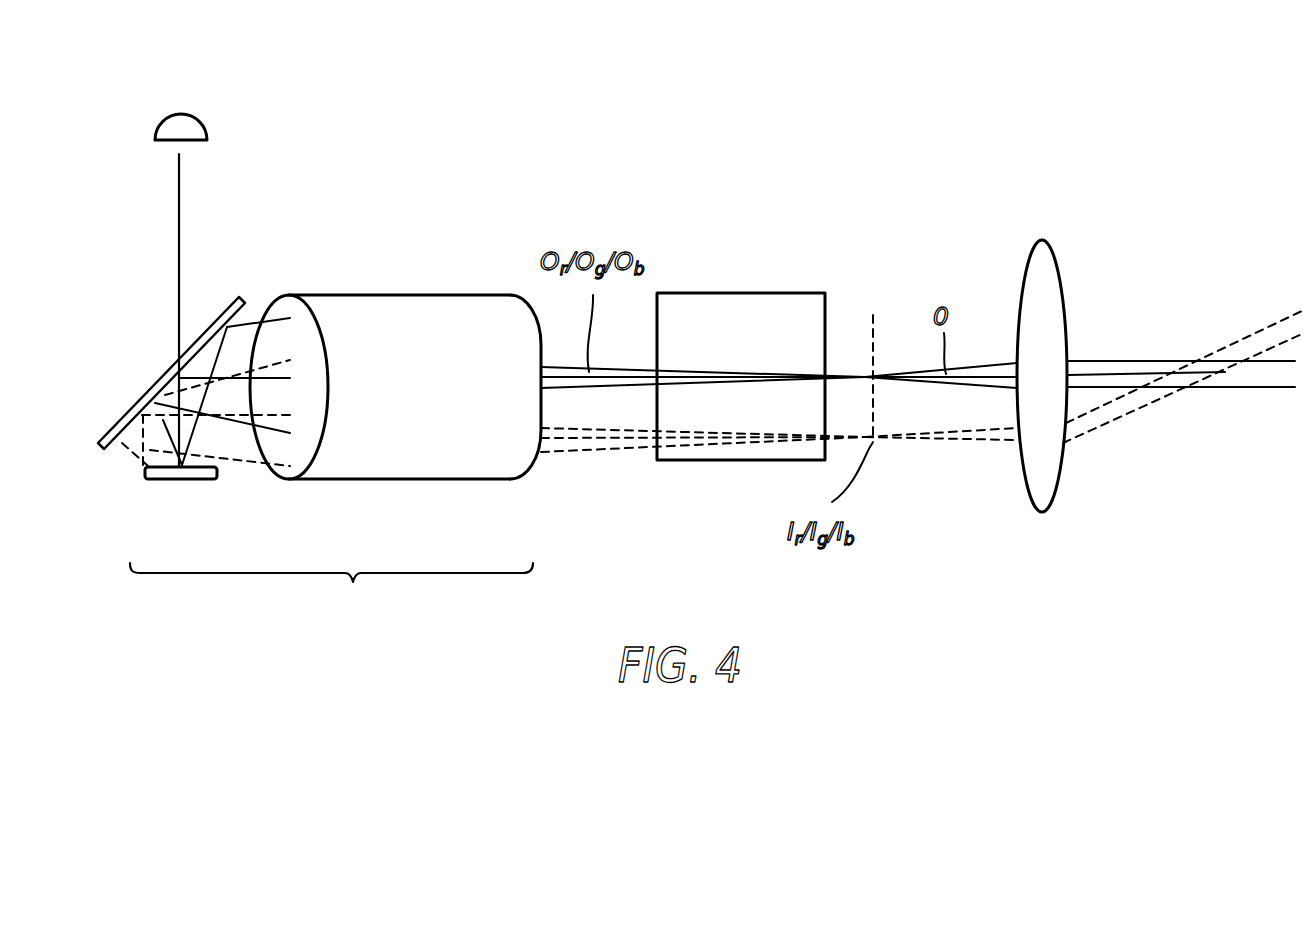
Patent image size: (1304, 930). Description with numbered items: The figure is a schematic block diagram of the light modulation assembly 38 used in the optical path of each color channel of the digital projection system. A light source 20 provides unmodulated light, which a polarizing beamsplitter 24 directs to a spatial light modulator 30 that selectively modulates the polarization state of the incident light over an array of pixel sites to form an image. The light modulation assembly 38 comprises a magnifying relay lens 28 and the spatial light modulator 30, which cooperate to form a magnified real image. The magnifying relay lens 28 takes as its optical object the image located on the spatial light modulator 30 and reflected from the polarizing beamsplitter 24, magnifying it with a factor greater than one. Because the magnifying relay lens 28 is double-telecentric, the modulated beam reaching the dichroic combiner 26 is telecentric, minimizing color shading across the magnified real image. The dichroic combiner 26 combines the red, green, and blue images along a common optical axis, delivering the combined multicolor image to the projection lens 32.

The light source 20 is at (197, 121).
The polarizing beamsplitter 24 is at (126, 420).
The dichroic combiner 26 is at (745, 292).
The magnifying relay lens 28 is at (415, 479).
The spatial light modulator 30 is at (177, 480).
The projection lens 32 is at (1057, 272).
The light modulation assembly 38 is at (331, 588).